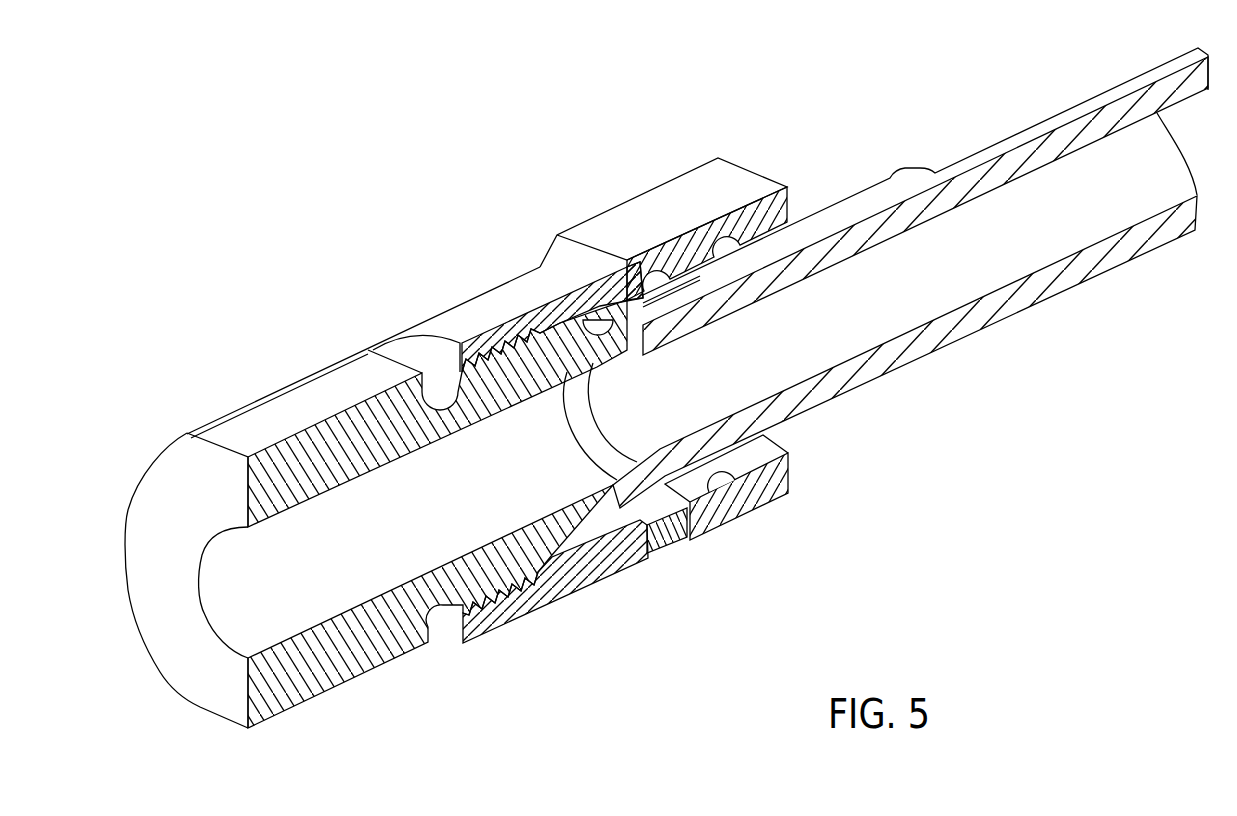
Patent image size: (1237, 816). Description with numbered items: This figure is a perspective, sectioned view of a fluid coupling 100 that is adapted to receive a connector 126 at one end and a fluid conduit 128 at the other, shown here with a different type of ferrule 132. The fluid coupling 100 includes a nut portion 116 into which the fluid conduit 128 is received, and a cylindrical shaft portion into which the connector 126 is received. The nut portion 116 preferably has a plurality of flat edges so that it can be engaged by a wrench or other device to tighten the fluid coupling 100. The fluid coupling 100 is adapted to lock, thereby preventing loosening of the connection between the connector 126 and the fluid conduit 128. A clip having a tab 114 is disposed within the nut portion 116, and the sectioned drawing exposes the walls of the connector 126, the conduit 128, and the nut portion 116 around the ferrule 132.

The fluid coupling 100 is at (578, 189).
The tab 114 is at (667, 552).
The nut portion 116 is at (773, 502).
The connector 126 is at (238, 388).
The fluid conduit 128 is at (943, 132).
The ferrule 132 is at (675, 283).